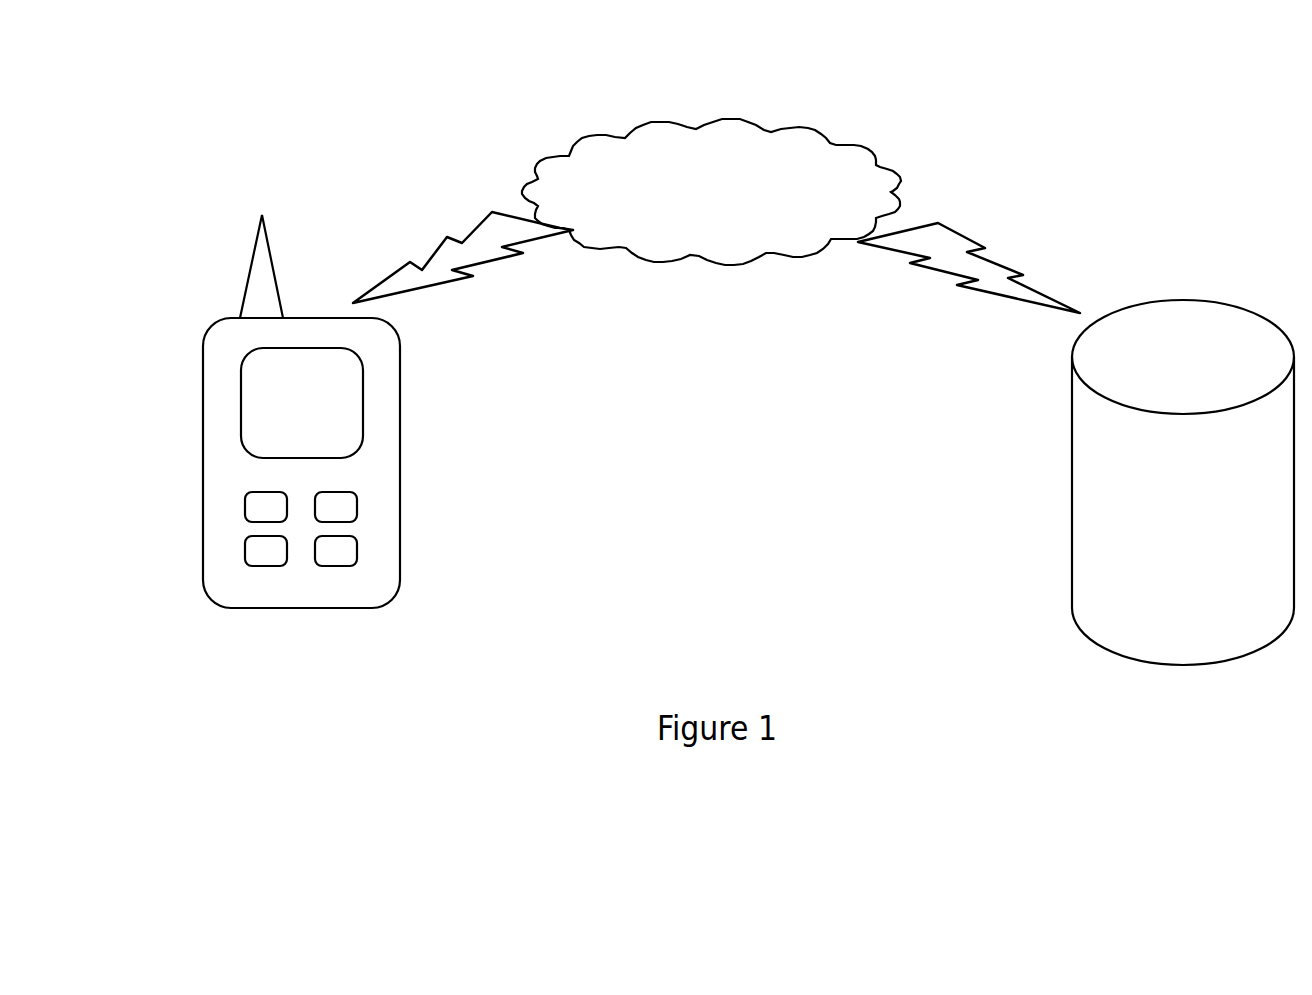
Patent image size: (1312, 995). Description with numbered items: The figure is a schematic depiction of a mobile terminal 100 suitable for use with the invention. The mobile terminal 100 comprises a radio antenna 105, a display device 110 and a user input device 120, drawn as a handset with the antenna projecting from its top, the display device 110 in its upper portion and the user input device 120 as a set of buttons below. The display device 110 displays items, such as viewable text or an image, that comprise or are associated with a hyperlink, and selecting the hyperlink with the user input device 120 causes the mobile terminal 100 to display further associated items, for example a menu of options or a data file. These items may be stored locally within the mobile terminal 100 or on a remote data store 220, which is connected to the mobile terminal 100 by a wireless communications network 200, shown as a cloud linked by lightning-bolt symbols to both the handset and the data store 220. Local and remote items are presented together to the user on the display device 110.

The mobile terminal 100 is at (182, 309).
The radio antenna 105 is at (249, 217).
The display device 110 is at (371, 404).
The user input device 120 is at (326, 526).
The wireless communications network 200 is at (742, 128).
The remote data store 220 is at (1164, 316).